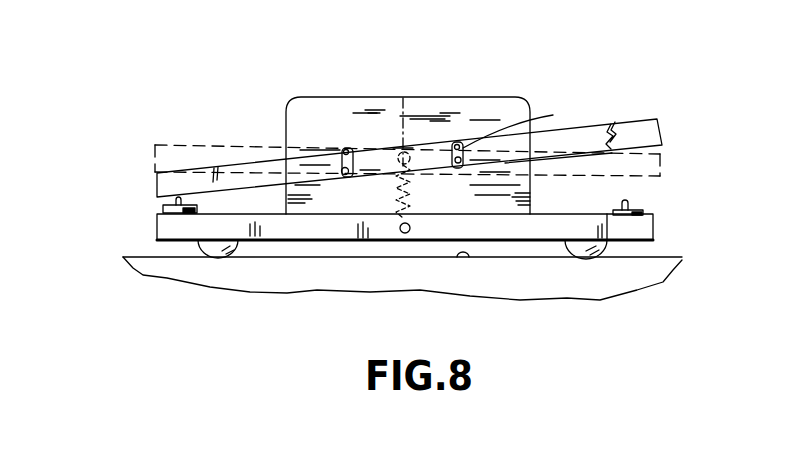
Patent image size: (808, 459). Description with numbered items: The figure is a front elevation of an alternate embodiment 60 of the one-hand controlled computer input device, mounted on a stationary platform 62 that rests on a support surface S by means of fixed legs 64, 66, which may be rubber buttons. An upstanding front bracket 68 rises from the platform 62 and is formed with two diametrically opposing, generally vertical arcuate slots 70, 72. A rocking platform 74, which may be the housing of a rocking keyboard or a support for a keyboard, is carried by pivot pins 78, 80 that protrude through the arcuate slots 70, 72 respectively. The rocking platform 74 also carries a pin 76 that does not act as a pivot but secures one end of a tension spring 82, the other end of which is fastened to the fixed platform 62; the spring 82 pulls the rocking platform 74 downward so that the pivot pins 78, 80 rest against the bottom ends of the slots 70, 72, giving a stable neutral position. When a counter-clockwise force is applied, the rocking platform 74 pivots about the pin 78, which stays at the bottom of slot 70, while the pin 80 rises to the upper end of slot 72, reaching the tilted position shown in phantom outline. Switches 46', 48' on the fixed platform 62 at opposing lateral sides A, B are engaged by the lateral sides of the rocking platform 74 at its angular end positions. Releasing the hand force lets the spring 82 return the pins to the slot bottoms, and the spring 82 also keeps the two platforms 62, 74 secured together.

The embodiment 60 is at (250, 118).
The stationary platform 62 is at (505, 230).
The support fixed leg 64 is at (216, 252).
The support fixed leg 66 is at (596, 249).
The front bracket 68 is at (512, 102).
The arcuate slot 70 is at (343, 147).
The arcuate slot 72 is at (523, 125).
The rocking platform 74 is at (647, 133).
The pin 76 is at (403, 98).
The pivot pin 78 is at (343, 175).
The pivot pin 80 is at (455, 142).
The tension spring 82 is at (397, 210).
The switch 46' is at (148, 207).
The switch 48' is at (667, 199).
The lateral side A is at (172, 226).
The lateral side B is at (655, 228).
The support surface S is at (452, 253).